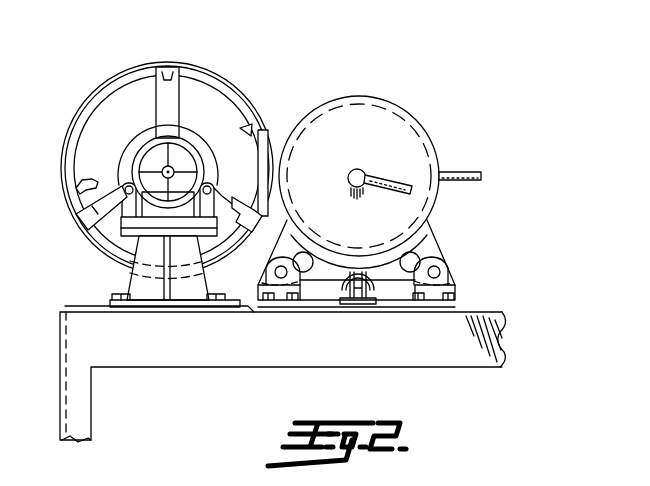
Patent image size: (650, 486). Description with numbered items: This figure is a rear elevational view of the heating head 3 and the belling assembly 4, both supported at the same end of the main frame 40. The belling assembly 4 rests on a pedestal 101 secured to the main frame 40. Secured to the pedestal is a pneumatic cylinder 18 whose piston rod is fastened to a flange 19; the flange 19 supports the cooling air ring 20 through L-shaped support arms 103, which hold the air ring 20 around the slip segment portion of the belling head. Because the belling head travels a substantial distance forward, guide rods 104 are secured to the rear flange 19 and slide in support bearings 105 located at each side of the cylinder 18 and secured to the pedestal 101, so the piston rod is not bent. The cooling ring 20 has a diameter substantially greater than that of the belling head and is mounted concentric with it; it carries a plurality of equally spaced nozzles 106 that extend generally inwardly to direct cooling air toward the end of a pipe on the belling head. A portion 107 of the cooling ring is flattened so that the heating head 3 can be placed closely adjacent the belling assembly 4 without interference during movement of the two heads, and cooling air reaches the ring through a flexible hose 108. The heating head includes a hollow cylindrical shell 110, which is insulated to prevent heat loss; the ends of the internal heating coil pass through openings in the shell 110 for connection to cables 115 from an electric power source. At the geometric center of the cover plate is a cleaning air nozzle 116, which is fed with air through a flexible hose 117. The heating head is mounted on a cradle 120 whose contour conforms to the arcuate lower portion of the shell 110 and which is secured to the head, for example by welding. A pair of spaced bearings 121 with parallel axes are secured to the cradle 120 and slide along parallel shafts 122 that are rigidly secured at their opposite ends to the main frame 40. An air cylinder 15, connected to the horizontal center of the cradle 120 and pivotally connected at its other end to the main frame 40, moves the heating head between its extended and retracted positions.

The heating head 3 is at (369, 99).
The belling assembly 4 is at (86, 81).
The air cylinder 15 is at (374, 284).
The pneumatic cylinder 18 is at (137, 169).
The flange 19 is at (150, 130).
The cooling air ring 20 is at (147, 65).
The main frame 40 is at (132, 356).
The pedestal 101 is at (152, 292).
The L-shaped support arms 103 is at (182, 84).
The guide rods 104 is at (218, 182).
The support bearings 105 is at (214, 152).
The nozzles 106 is at (88, 117).
The flattened portion 107 is at (267, 132).
The flexible hose 108 is at (78, 196).
The hollow cylindrical shell 110 is at (416, 118).
The cables 115 is at (456, 172).
The cleaning air nozzle 116 is at (354, 170).
The flexible hose 117 is at (378, 178).
The cradle 120 is at (432, 240).
The bearings 121 is at (446, 284).
The shafts 122 is at (440, 264).